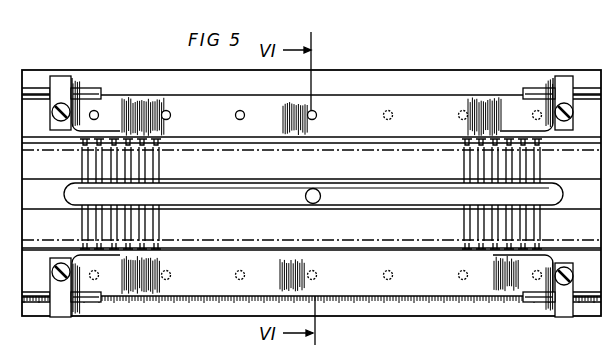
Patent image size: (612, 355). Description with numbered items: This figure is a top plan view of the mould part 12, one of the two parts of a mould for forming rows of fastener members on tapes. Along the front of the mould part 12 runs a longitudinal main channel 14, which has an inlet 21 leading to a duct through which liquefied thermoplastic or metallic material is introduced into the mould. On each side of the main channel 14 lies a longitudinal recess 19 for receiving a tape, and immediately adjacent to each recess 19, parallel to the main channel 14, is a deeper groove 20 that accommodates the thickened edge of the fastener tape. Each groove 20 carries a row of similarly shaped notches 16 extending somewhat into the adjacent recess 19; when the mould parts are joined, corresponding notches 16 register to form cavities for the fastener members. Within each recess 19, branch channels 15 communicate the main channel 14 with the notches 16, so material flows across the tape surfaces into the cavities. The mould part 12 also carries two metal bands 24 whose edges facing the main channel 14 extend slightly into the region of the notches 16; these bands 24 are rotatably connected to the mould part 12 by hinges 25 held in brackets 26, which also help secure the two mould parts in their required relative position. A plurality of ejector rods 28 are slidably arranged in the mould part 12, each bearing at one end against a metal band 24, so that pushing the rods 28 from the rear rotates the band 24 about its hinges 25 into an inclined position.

The mould part 12 is at (601, 232).
The main channel 14 is at (563, 197).
The branch channels 15 is at (83, 164).
The notches 16 is at (128, 122).
The recesses 19 is at (62, 217).
The grooves 20 is at (586, 144).
The inlet 21 is at (316, 189).
The metal bands 24 is at (199, 108).
The hinges 25 is at (89, 92).
The brackets 26 is at (55, 82).
The ejector rods 28 is at (461, 112).